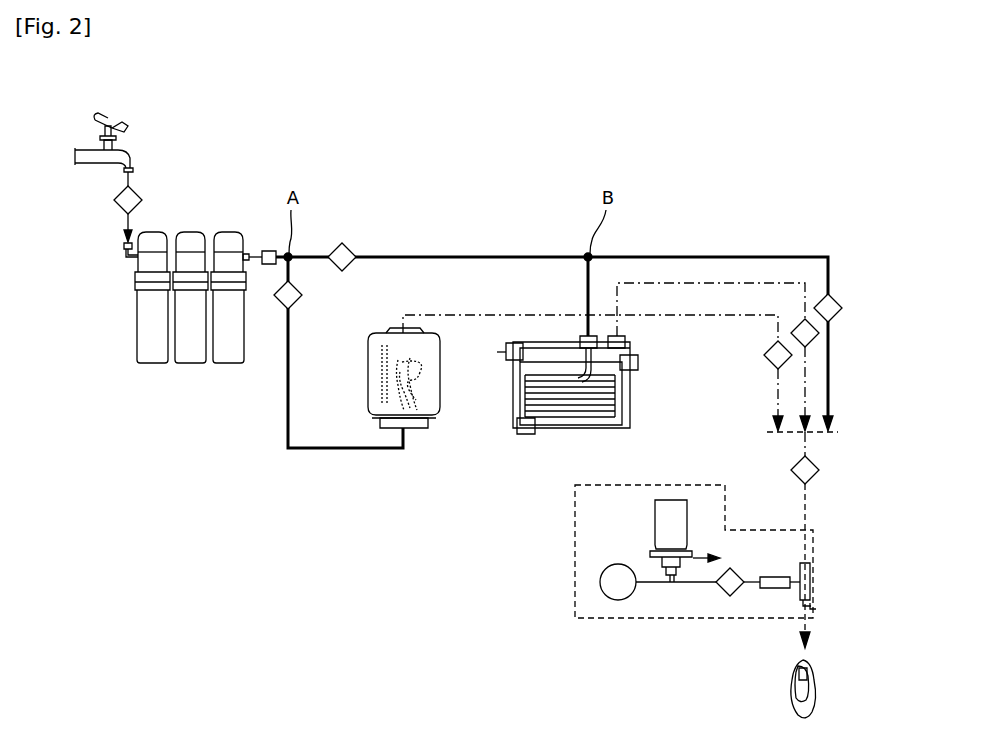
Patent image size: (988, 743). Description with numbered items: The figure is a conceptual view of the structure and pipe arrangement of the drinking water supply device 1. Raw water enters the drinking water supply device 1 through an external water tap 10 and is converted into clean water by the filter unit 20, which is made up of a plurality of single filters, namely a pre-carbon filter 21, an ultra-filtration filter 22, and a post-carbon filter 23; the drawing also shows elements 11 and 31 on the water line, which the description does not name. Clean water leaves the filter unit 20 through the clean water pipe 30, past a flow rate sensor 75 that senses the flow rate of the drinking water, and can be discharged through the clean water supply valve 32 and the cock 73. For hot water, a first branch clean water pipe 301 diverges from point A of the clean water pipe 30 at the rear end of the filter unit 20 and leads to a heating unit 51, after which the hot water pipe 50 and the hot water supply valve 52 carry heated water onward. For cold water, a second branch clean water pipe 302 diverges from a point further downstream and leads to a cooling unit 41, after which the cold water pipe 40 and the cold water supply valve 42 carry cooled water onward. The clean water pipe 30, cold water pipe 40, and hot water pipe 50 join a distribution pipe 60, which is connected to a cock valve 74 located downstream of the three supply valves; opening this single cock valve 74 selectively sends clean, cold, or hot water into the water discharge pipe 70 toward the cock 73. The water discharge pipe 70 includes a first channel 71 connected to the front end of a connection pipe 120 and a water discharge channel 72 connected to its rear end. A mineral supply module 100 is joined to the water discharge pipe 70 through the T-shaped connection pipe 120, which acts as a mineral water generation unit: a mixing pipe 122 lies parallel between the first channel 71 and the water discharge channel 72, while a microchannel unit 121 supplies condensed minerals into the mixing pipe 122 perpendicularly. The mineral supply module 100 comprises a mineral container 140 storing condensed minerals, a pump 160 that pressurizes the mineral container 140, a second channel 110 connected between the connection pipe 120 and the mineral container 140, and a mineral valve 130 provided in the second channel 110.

The drinking water supply device 1 is at (690, 157).
The external water tap 10 is at (132, 158).
The water supply valve 11 is at (140, 196).
The filter unit 20 is at (236, 430).
The pre-carbon filter 21 is at (152, 364).
The ultra-filtration filter 22 is at (190, 364).
The post-carbon filter 23 is at (228, 364).
The clean water pipe 30 is at (510, 256).
The main pipe valve 31 is at (346, 245).
The clean water supply valve 32 is at (834, 300).
The cold water pipe 40 is at (682, 282).
The cooling unit 41 is at (634, 388).
The cold water supply valve 42 is at (814, 337).
The hot water pipe 50 is at (540, 314).
The heating unit 51 is at (441, 385).
The hot water supply valve 52 is at (764, 352).
The distribution pipe 60 is at (836, 431).
The water discharge pipe 70 is at (862, 512).
The first channel 71 is at (807, 514).
The water discharge channel 72 is at (812, 606).
The cock 73 is at (811, 674).
The cock valve 74 is at (817, 468).
The flow rate sensor 75 is at (262, 252).
The mineral supply module 100 is at (576, 517).
The second channel 110 is at (681, 590).
The connection pipe 120 is at (800, 571).
The microchannel unit 121 is at (764, 590).
The mixing pipe 122 is at (800, 603).
The mineral valve 130 is at (730, 568).
The mineral container 140 is at (670, 498).
The pump 160 is at (616, 602).
The first branch clean water pipe 301 is at (345, 452).
The second branch clean water pipe 302 is at (592, 280).